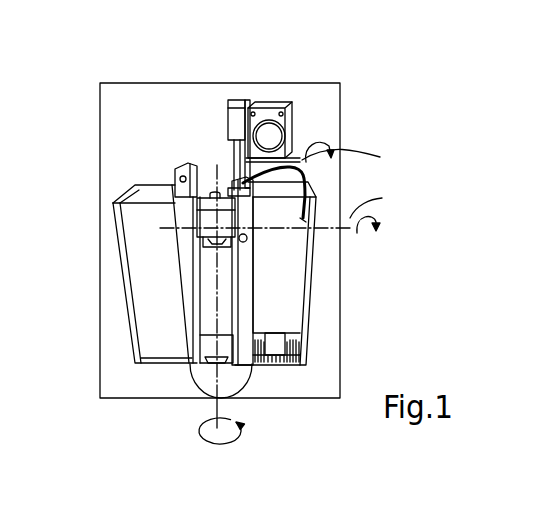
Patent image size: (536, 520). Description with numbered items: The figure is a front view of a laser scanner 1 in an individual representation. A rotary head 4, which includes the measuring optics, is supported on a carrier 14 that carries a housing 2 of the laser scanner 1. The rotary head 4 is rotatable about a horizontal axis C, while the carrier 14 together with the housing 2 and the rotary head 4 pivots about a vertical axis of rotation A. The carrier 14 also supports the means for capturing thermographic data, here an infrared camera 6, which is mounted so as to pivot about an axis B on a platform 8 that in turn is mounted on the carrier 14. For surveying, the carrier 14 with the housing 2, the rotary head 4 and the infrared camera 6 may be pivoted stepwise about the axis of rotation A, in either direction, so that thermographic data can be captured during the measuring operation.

The laser scanner 1 is at (325, 270).
The housing 2 is at (137, 228).
The rotary head 4 is at (210, 188).
The infrared camera 6 is at (294, 128).
The platform 8 is at (238, 98).
The carrier 14 is at (178, 243).